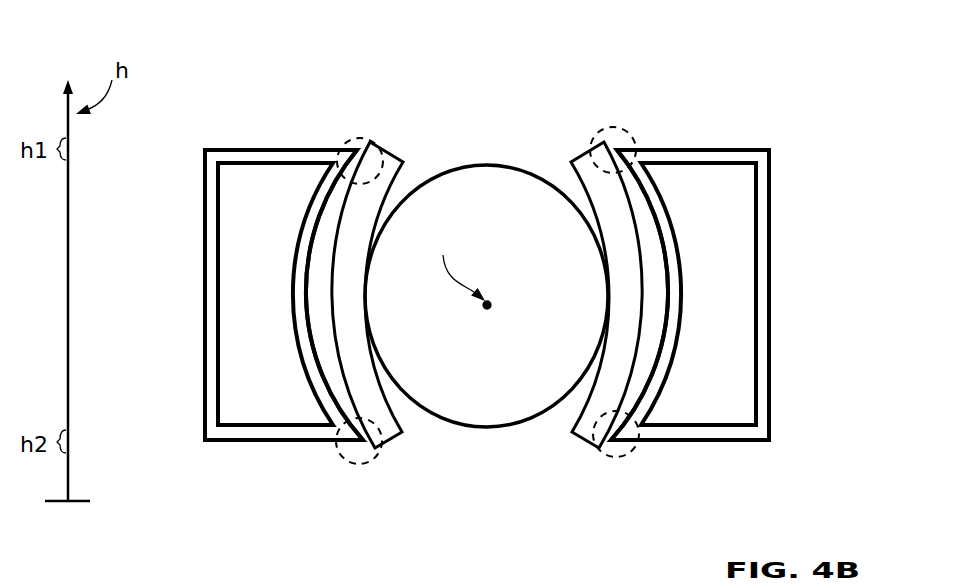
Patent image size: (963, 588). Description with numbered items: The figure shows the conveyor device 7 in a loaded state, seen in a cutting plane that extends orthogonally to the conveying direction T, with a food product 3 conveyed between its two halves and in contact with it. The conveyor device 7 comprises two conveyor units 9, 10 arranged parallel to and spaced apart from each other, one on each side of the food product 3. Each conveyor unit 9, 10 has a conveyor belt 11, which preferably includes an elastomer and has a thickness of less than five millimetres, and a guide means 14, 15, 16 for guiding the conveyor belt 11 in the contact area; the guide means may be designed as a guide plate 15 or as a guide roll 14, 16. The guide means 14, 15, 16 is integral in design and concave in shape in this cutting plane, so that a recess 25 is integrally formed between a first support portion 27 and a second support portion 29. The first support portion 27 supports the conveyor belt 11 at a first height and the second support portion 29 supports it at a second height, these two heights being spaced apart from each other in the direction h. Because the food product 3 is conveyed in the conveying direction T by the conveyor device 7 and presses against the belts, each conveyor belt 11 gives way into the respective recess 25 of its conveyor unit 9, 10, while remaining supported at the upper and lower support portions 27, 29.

The food product 3 is at (472, 176).
The conveyor device 7 is at (312, 68).
The conveyor unit 9 is at (673, 135).
The conveyor unit 10 is at (226, 136).
The conveyor belt 11 is at (390, 440).
The guide roll 14 is at (303, 112).
The guide plate 15 is at (793, 117).
The guide roll 16 is at (793, 117).
The recess 25 is at (317, 303).
The first support portion 27 is at (375, 143).
The second support portion 29 is at (362, 466).